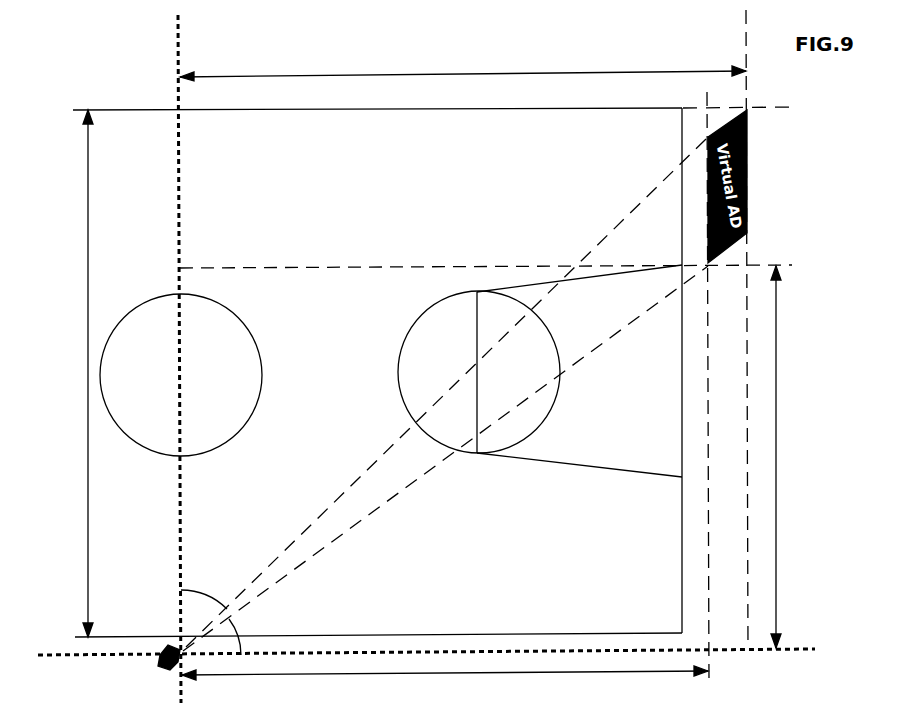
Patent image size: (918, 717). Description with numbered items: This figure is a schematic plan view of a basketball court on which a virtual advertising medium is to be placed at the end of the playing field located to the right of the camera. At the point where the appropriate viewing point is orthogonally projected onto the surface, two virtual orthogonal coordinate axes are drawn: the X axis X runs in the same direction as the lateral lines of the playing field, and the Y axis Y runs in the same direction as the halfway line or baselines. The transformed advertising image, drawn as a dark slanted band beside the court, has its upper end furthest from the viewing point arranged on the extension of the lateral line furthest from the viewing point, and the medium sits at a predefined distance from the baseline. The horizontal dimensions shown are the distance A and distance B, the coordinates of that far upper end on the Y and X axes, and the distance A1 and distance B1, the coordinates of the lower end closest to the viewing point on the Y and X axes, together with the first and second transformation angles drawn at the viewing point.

The distance A is at (79, 373).
The distance B is at (463, 62).
The distance A1 is at (794, 457).
The distance B1 is at (445, 690).
The X axis X is at (427, 667).
The Y axis Y is at (165, 359).